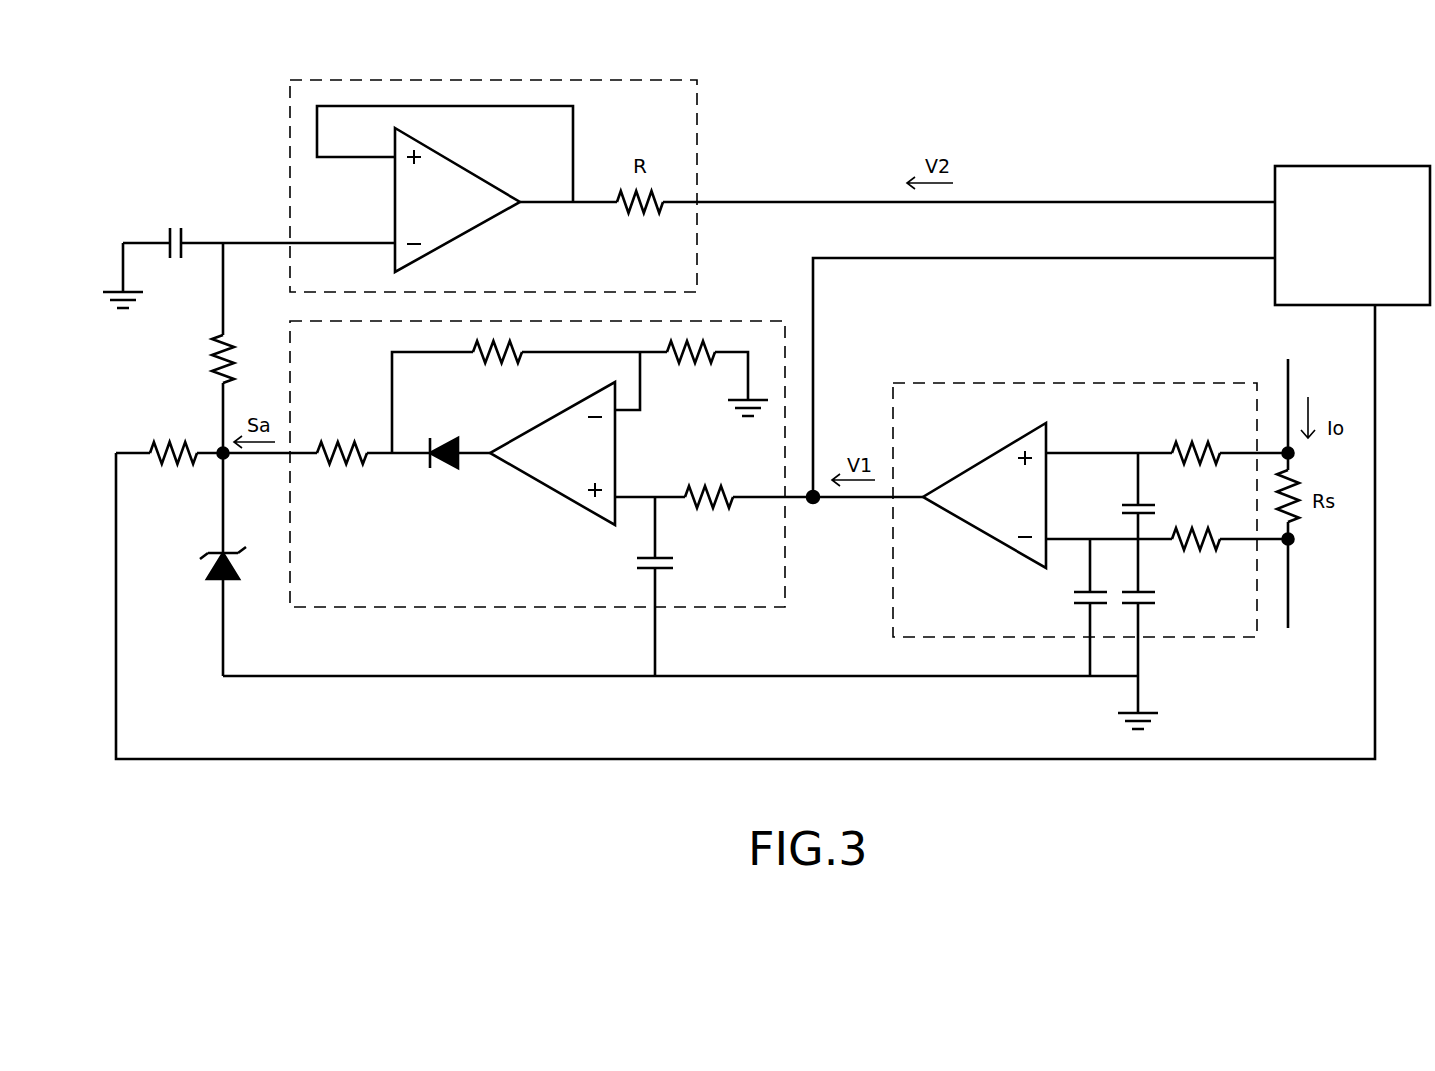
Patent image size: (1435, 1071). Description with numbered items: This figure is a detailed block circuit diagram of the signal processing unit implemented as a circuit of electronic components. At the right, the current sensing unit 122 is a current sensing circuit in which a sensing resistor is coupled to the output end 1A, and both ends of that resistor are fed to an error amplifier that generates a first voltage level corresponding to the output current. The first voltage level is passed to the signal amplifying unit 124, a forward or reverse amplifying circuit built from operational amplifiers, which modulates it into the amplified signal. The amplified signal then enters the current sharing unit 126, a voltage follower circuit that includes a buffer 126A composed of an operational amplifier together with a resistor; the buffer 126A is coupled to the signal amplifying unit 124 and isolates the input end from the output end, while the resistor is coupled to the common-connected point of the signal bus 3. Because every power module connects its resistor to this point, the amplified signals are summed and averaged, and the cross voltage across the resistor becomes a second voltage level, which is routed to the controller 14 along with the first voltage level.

The buffer 126A is at (472, 98).
The current sharing unit 126 is at (700, 111).
The signal amplifying unit 124 is at (765, 328).
The current sensing unit 122 is at (1120, 390).
The controller 14 is at (1363, 182).
The signal bus 3 is at (1037, 200).
The output end 1A is at (1290, 386).